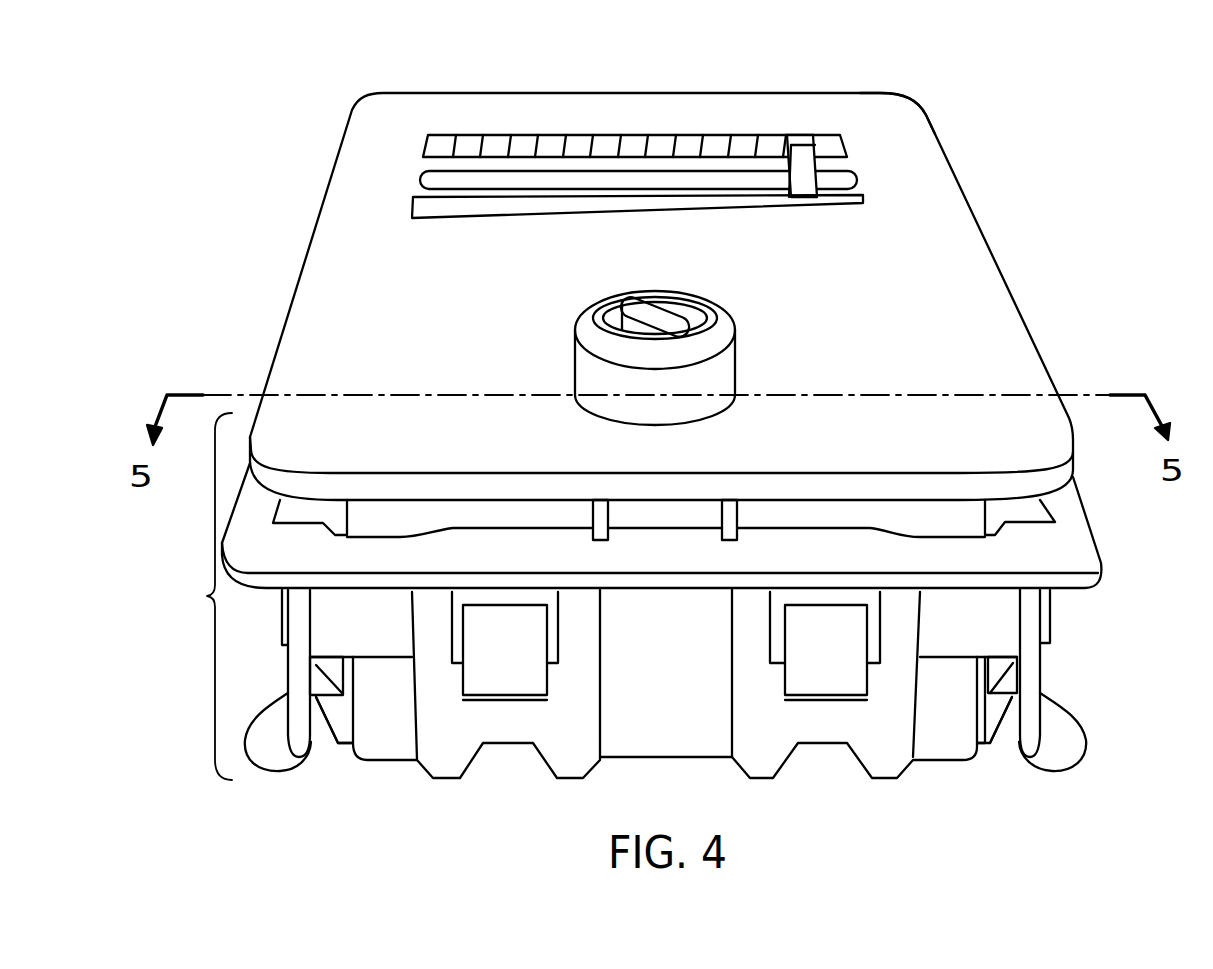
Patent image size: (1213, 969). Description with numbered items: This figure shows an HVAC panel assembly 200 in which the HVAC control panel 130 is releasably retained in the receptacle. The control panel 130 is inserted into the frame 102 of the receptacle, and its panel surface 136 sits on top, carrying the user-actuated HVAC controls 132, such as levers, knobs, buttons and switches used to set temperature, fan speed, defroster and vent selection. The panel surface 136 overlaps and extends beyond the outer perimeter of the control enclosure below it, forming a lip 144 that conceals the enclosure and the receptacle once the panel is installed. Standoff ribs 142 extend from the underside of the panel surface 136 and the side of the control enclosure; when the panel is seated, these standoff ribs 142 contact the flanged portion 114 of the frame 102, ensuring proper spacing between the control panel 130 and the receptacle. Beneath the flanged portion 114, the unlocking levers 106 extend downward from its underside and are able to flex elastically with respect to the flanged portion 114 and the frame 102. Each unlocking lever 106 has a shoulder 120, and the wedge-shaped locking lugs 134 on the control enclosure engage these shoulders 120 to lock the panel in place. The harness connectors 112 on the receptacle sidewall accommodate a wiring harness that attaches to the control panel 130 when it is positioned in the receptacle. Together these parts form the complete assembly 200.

The frame 102 is at (1100, 576).
The unlocking lever 106 is at (265, 775).
The harness connector 112 is at (465, 703).
The flanged portion 114 is at (1080, 537).
The shoulder 120 is at (320, 668).
The HVAC control panel 130 is at (940, 127).
The HVAC controls 132 is at (426, 147).
The locking lug 134 is at (345, 746).
The panel surface 136 is at (865, 123).
The standoff rib 142 is at (592, 538).
The lip 144 is at (492, 500).
The HVAC panel assembly 200 is at (207, 596).